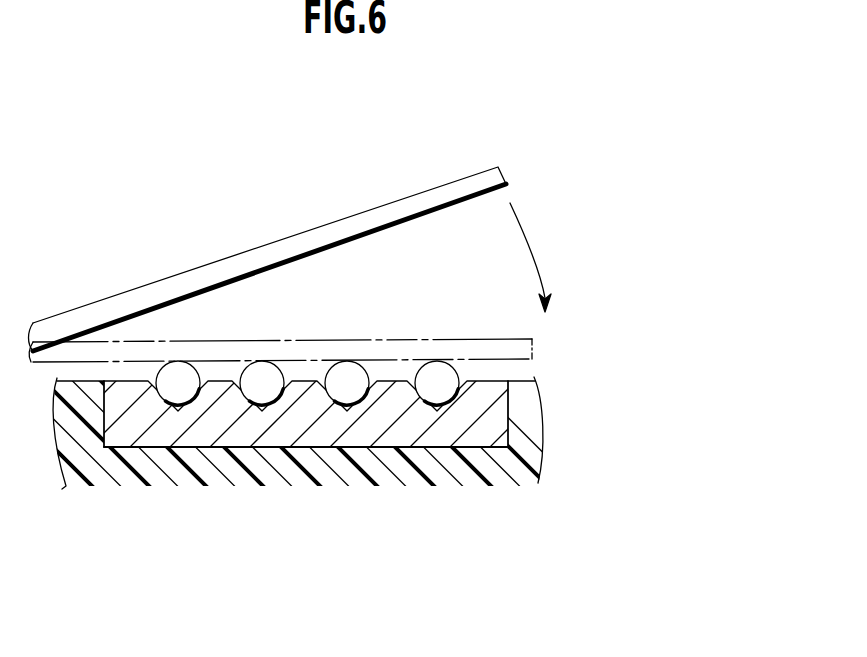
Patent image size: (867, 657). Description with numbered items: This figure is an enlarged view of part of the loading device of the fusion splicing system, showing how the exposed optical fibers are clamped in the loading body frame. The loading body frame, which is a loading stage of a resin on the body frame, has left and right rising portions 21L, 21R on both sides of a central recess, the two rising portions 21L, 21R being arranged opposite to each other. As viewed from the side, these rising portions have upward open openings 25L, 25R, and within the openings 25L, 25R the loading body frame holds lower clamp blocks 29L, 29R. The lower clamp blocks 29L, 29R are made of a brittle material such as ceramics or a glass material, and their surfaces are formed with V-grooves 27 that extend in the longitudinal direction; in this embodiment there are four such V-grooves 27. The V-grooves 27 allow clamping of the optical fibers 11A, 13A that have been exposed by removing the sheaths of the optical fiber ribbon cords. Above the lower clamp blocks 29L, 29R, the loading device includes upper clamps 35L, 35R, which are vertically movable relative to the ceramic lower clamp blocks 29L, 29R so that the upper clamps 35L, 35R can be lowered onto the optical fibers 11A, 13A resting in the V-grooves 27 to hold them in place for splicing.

The upper clamp 35L is at (368, 225).
The upper clamp 35R is at (385, 232).
The V-groove 27 is at (163, 405).
The rising portion 21L is at (540, 462).
The rising portion 21R is at (363, 432).
The opening 25L is at (263, 447).
The opening 25R is at (303, 474).
The lower clamp block 29L is at (352, 420).
The lower clamp block 29R is at (306, 482).
The optical fiber 11A is at (146, 448).
The optical fiber 13A is at (345, 506).